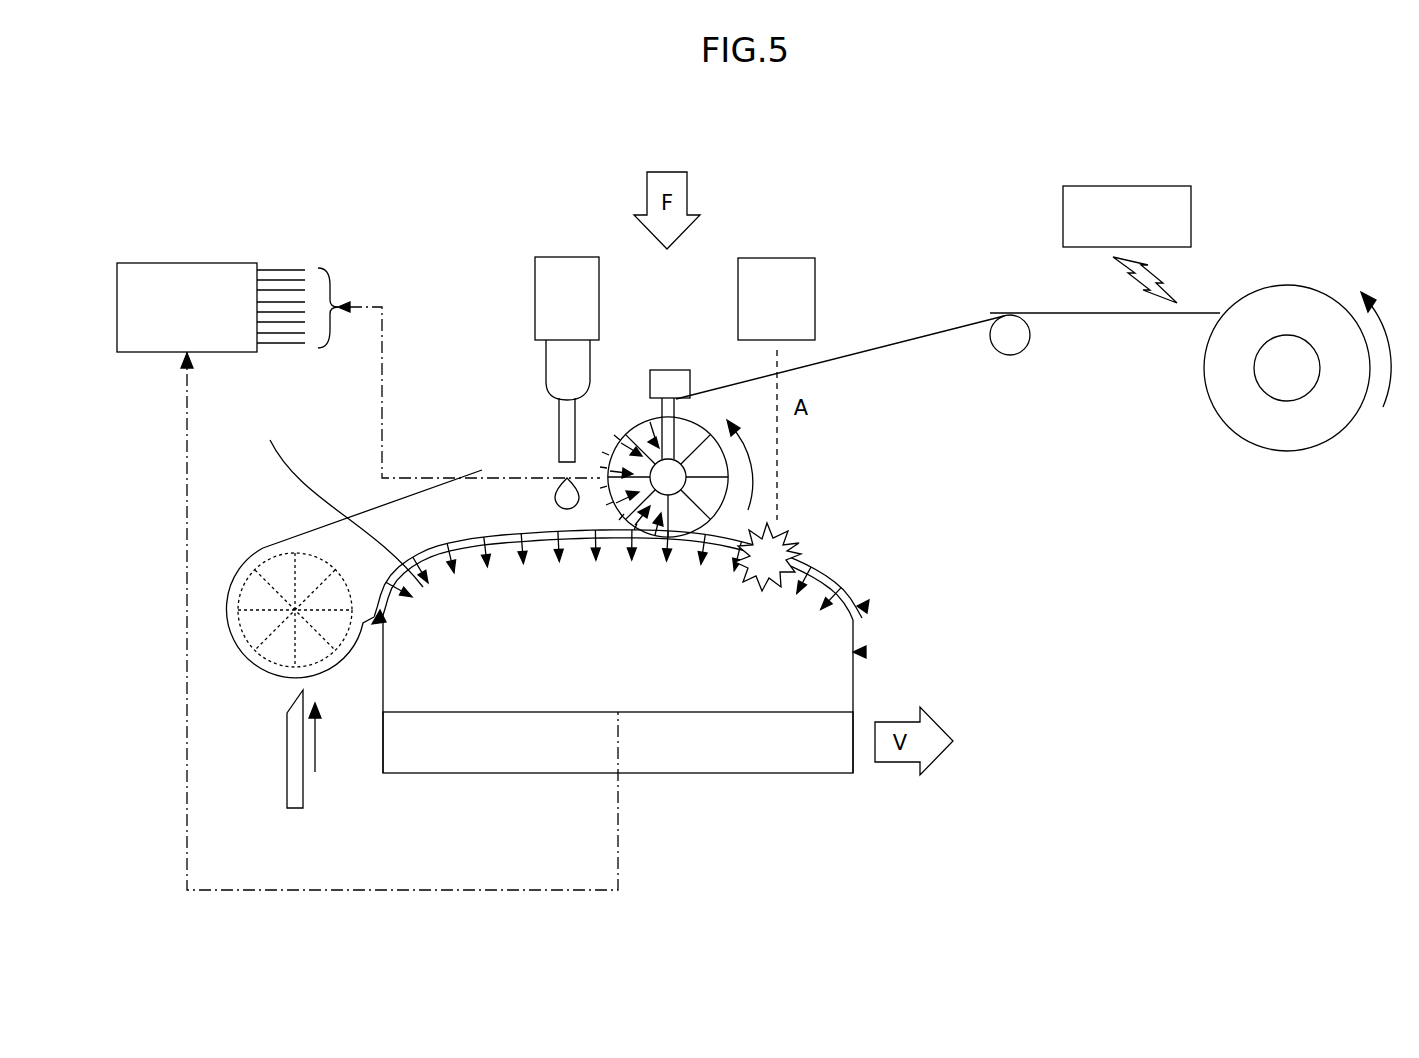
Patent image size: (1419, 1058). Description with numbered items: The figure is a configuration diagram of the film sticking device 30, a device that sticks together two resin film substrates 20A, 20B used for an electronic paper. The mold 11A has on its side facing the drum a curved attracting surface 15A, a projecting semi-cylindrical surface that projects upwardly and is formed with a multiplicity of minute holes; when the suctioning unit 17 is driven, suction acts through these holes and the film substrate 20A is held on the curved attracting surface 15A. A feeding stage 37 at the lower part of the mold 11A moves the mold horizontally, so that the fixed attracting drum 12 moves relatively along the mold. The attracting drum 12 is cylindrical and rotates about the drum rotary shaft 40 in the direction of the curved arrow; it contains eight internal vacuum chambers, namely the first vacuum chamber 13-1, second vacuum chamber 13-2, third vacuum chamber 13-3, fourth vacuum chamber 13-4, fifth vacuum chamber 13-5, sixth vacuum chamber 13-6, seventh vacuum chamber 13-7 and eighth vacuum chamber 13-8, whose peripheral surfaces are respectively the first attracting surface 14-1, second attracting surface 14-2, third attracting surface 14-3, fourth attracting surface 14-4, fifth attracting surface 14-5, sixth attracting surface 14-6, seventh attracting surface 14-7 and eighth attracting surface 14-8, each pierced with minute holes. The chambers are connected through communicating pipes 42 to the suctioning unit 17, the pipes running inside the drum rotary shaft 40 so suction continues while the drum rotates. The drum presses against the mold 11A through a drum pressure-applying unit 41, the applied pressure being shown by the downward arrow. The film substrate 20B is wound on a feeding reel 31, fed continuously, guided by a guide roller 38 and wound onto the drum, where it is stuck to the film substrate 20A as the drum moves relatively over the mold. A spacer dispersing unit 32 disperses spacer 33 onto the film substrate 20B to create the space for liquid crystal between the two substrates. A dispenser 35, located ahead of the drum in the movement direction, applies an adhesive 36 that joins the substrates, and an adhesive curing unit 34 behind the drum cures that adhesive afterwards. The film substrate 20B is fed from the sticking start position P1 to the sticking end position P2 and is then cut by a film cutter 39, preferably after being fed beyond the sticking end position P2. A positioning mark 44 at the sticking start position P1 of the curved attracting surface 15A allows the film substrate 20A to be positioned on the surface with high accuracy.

The film sticking device 30 is at (875, 83).
The suctioning unit 17 is at (172, 268).
The communicating pipes 42 is at (283, 280).
The dispenser 35 is at (560, 272).
The adhesive curing unit 34 is at (780, 272).
The drum pressure-applying unit 41 is at (666, 382).
The spacer dispersing unit 32 is at (1147, 197).
The spacer 33 is at (1150, 275).
The guide roller 38 is at (1013, 340).
The feeding reel 31 is at (1283, 452).
The film substrate 20B is at (918, 335).
The film substrate 20A is at (866, 597).
The curved attracting surface 15A is at (354, 543).
The attracting drum 12 is at (281, 577).
The positioning mark 44 is at (857, 590).
The sticking start position P1 is at (866, 607).
The sticking end position P2 is at (363, 657).
The mold 11A is at (866, 652).
The feeding stage 37 is at (752, 752).
The film cutter 39 is at (303, 795).
The drum rotary shaft 40 is at (668, 500).
The adhesive 36 is at (556, 494).
The first vacuum chamber 13-1 is at (645, 425).
The second vacuum chamber 13-2 is at (694, 440).
The third vacuum chamber 13-3 is at (712, 462).
The fourth vacuum chamber 13-4 is at (706, 492).
The fifth vacuum chamber 13-5 is at (690, 520).
The sixth vacuum chamber 13-6 is at (655, 515).
The seventh vacuum chamber 13-7 is at (622, 490).
The eighth vacuum chamber 13-8 is at (625, 445).
The first attracting surface 14-1 is at (632, 452).
The second attracting surface 14-2 is at (697, 420).
The third attracting surface 14-3 is at (725, 448).
The fourth attracting surface 14-4 is at (728, 498).
The fifth attracting surface 14-5 is at (705, 560).
The sixth attracting surface 14-6 is at (640, 505).
The seventh attracting surface 14-7 is at (635, 490).
The eighth attracting surface 14-8 is at (614, 470).